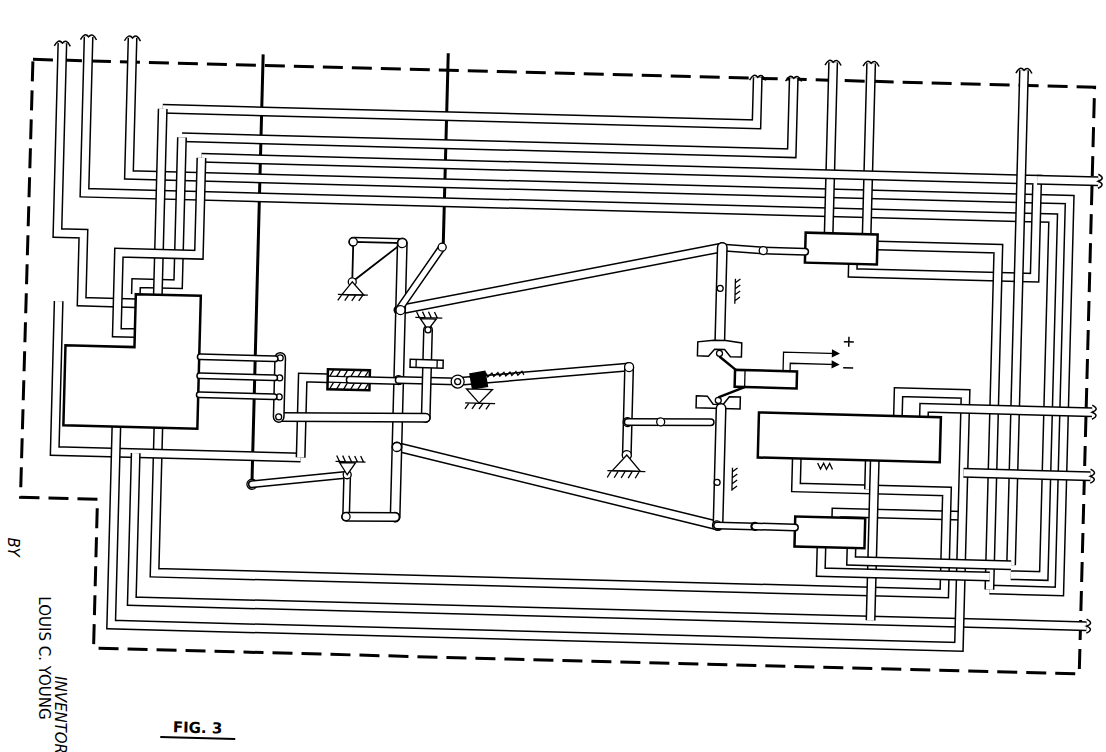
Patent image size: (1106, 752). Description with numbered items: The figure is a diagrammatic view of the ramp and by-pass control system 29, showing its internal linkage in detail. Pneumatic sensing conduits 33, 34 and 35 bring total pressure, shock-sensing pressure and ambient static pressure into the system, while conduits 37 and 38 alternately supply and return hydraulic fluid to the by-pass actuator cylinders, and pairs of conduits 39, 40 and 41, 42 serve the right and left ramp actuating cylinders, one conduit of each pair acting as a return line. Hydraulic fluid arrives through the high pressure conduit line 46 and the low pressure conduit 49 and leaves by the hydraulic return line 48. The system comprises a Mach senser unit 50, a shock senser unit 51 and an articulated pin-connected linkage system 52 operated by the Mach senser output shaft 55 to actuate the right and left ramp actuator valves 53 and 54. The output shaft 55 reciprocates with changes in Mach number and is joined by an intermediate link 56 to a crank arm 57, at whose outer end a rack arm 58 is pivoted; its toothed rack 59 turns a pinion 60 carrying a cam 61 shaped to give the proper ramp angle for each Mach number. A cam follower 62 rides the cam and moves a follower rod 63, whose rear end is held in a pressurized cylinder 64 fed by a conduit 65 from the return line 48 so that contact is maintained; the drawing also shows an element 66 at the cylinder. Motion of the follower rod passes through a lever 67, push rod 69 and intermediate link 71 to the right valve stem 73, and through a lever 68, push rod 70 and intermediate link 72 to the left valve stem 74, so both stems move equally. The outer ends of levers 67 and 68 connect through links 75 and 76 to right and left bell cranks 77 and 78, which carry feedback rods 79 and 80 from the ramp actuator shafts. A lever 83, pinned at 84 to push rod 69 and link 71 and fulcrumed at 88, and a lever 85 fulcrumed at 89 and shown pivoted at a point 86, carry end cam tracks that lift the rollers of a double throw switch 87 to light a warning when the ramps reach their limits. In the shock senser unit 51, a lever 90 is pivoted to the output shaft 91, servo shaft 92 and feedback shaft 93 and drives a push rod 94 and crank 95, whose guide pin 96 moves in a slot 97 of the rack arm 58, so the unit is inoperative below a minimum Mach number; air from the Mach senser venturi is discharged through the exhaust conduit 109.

The control system 29 is at (612, 679).
The total pressure conduit 33 is at (1013, 83).
The shock sensing conduit 34 is at (52, 159).
The ambient static pressure conduit 35 is at (981, 394).
The by-pass actuator conduit 37 is at (743, 75).
The by-pass actuator conduit 38 is at (783, 71).
The right ramp actuating conduit 39 is at (826, 83).
The right ramp actuating conduit 40 is at (866, 85).
The left ramp actuating conduit 41 is at (77, 92).
The left ramp actuating conduit 42 is at (126, 111).
The high pressure conduit line 46 is at (1048, 160).
The hydraulic return line 48 is at (70, 465).
The low pressure conduit 49 is at (911, 384).
The Mach senser unit 50 is at (836, 416).
The shock senser unit 51 is at (179, 337).
The linkage system 52 is at (540, 502).
The right ramp actuator valve 53 is at (825, 245).
The left ramp actuator valve 54 is at (816, 533).
The Mach senser output shaft 55 is at (706, 408).
The intermediate link 56 is at (656, 424).
The crank arm 57 is at (633, 386).
The rack arm 58 is at (557, 365).
The toothed rack 59 is at (513, 378).
The pinion 60 is at (487, 386).
The cam 61 is at (468, 402).
The cam follower 62 is at (457, 395).
The follower rod 63 is at (383, 376).
The pressurized cylinder 64 is at (347, 375).
The conduit 65 is at (302, 443).
The piston rod 66 is at (371, 398).
The lever 67 is at (399, 331).
The lever 68 is at (403, 476).
The push rod 69 is at (596, 271).
The push rod 70 is at (581, 499).
The intermediate link 71 is at (745, 240).
The intermediate link 72 is at (732, 517).
The right ramp actuator valve stem 73 is at (797, 239).
The left ramp actuator valve stem 74 is at (791, 518).
The link 75 is at (369, 245).
The link 76 is at (376, 527).
The right bell crank 77 is at (347, 263).
The left bell crank 78 is at (343, 500).
The ramp feedback rod 79 is at (445, 103).
The feedback rod 80 is at (258, 102).
The lever 83 is at (716, 274).
The pin 84 is at (717, 239).
The lever 85 is at (719, 448).
The pivot 86 is at (719, 524).
The double throw switch 87 is at (797, 374).
The fulcrum 88 is at (718, 286).
The fulcrum 89 is at (720, 479).
The lever 90 is at (285, 372).
The shock senser output shaft 91 is at (239, 401).
The servo shaft 92 is at (238, 386).
The feedback shaft 93 is at (213, 364).
The push rod 94 is at (339, 423).
The crank 95 is at (431, 426).
The guide pin 96 is at (429, 346).
The slot 97 is at (443, 365).
The exhaust conduit 109 is at (843, 472).